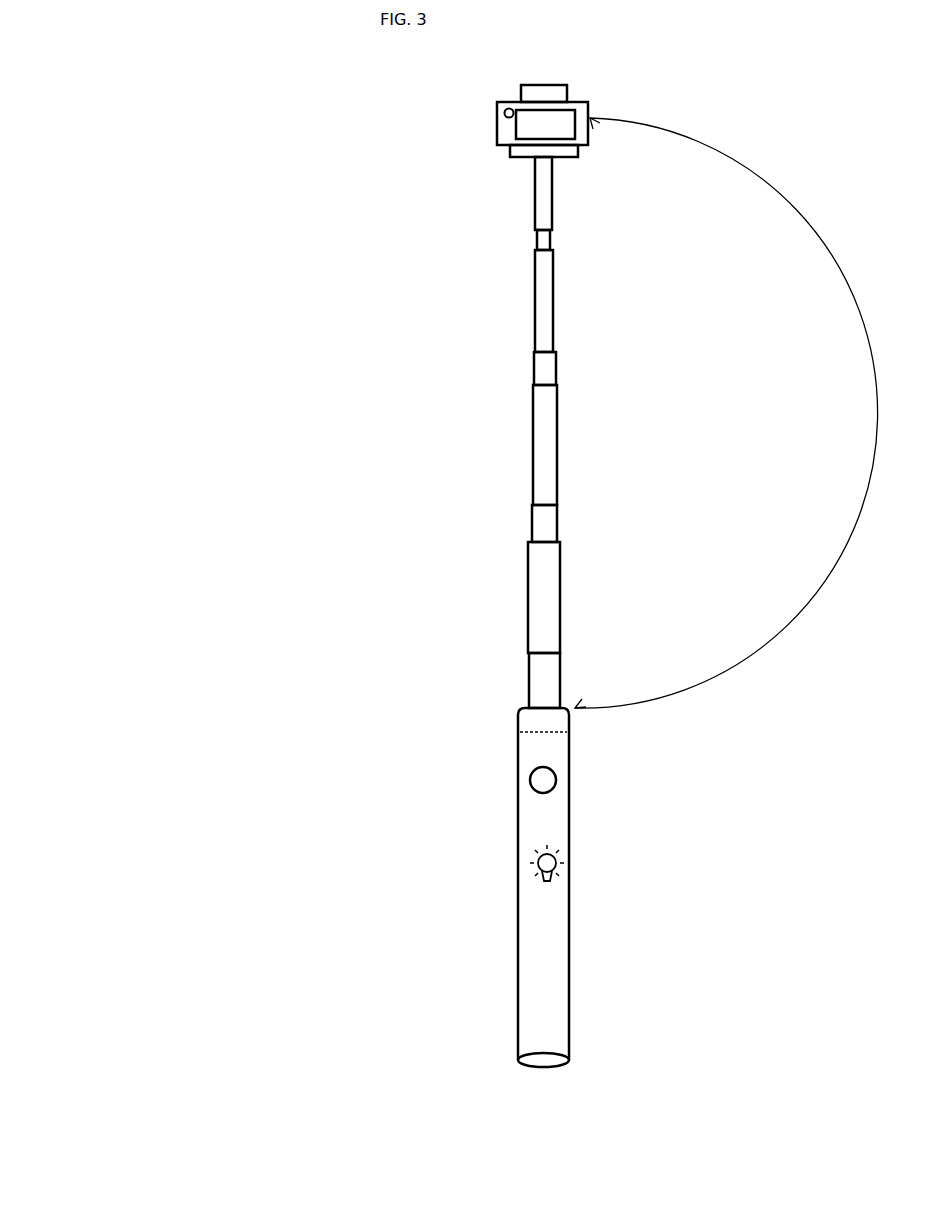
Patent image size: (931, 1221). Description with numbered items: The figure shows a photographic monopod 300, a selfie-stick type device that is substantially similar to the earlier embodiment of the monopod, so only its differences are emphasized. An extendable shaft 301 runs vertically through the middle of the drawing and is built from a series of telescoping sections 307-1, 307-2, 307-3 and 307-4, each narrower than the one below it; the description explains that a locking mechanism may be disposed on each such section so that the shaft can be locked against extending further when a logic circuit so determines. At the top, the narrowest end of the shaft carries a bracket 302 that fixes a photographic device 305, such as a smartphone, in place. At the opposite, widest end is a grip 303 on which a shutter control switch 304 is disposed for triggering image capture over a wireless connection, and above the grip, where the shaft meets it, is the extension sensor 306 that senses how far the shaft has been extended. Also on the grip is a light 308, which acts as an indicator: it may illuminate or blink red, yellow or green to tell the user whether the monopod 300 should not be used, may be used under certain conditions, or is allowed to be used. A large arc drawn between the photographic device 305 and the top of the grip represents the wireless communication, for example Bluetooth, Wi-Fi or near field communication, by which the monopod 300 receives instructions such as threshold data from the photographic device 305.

The photographic monopod 300 is at (78, 86).
The extendable shaft 301 is at (528, 702).
The camera mount knob 302 is at (573, 86).
The handle 303 is at (575, 855).
The button 304 is at (566, 780).
The photographic device 305 is at (592, 137).
The handle top connector 306 is at (577, 712).
The pole section 1 307-1 is at (529, 687).
The pole section 2 307-2 is at (529, 520).
The pole section 3 307-3 is at (530, 375).
The pole section 4 307-4 is at (531, 235).
The light 308 is at (523, 877).